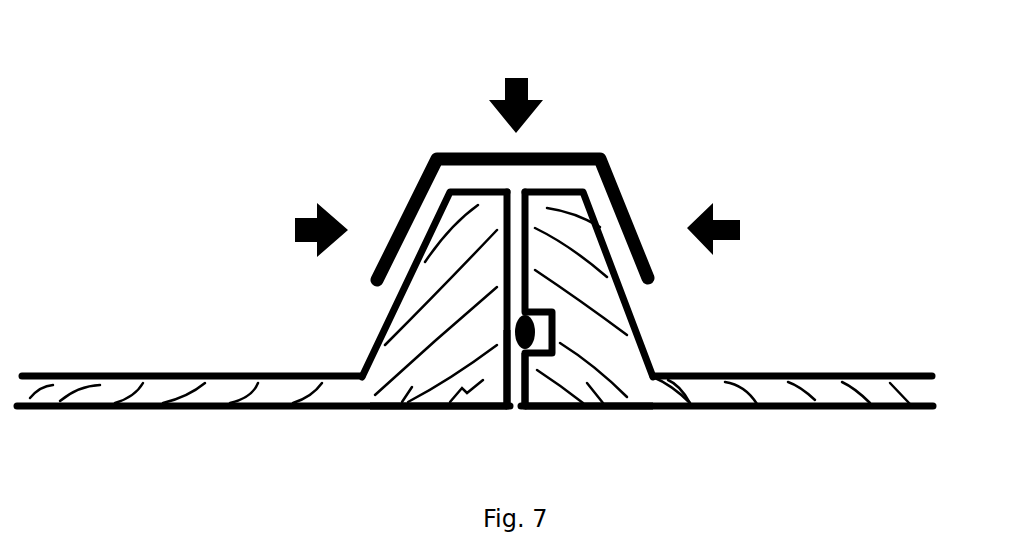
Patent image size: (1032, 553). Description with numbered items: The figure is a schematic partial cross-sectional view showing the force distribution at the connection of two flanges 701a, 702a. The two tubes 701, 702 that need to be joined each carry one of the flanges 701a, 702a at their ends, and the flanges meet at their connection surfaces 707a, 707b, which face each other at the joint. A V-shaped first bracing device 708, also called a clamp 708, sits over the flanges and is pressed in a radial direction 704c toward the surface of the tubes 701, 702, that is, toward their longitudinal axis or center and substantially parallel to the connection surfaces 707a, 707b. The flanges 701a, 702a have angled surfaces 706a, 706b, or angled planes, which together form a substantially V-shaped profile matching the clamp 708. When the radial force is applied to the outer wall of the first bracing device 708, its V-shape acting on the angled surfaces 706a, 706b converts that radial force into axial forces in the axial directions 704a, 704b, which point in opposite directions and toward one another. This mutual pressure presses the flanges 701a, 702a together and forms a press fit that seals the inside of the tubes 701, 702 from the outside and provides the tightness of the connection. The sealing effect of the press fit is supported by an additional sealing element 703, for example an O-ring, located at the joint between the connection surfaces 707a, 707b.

The tube 701 is at (163, 341).
The tube 702 is at (772, 333).
The flange 701a is at (397, 411).
The flange 702a is at (607, 412).
The sealing element 703 is at (448, 410).
The axial direction 704a is at (307, 215).
The axial direction 704b is at (740, 218).
The radial direction 704c is at (530, 80).
The angled surface 706a is at (367, 353).
The angled surface 706b is at (653, 353).
The connection surface 707a is at (503, 415).
The connection surface 707b is at (528, 415).
The first bracing device 708 is at (610, 170).